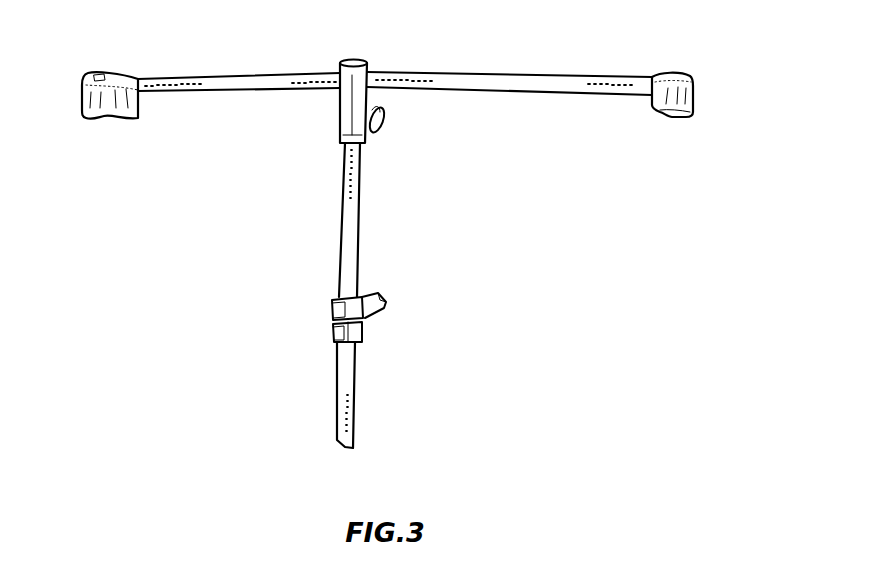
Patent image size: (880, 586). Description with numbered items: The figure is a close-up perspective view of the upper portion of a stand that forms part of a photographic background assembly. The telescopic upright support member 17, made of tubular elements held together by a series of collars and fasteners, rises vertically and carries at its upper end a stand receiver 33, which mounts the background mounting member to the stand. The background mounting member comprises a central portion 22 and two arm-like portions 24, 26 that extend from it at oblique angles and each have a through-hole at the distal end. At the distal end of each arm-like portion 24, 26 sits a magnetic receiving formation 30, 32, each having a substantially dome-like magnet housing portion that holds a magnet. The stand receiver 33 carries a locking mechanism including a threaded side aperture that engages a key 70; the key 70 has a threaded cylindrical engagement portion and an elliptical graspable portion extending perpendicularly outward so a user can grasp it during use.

The upright support member 17 is at (359, 245).
The central portion 22 is at (395, 53).
The arm-like portion 24 is at (211, 76).
The arm-like portion 26 is at (512, 75).
The magnetic receiving formation 30 is at (673, 74).
The magnetic receiving formation 32 is at (120, 74).
The stand receiver 33 is at (356, 60).
The key 70 is at (385, 125).